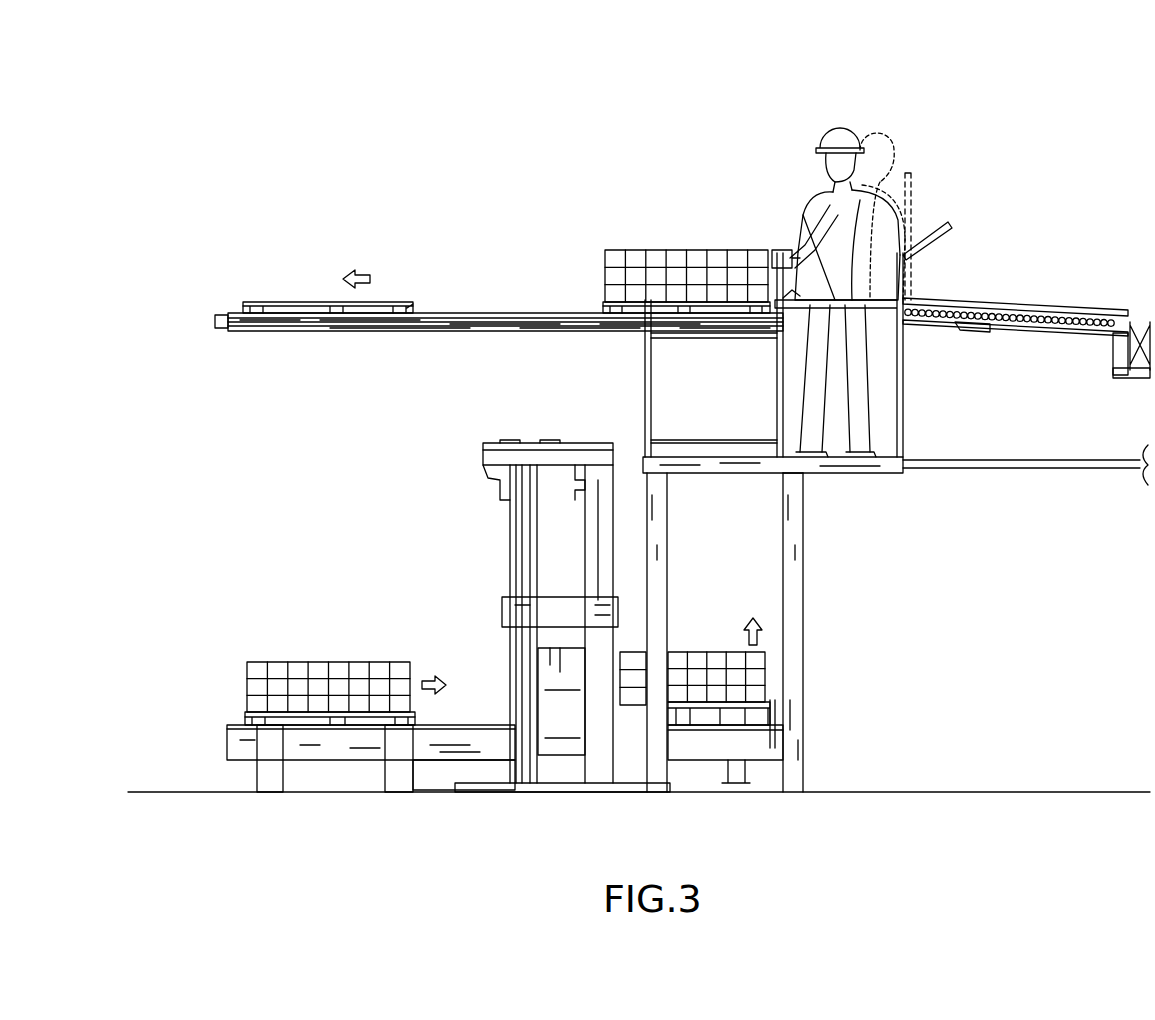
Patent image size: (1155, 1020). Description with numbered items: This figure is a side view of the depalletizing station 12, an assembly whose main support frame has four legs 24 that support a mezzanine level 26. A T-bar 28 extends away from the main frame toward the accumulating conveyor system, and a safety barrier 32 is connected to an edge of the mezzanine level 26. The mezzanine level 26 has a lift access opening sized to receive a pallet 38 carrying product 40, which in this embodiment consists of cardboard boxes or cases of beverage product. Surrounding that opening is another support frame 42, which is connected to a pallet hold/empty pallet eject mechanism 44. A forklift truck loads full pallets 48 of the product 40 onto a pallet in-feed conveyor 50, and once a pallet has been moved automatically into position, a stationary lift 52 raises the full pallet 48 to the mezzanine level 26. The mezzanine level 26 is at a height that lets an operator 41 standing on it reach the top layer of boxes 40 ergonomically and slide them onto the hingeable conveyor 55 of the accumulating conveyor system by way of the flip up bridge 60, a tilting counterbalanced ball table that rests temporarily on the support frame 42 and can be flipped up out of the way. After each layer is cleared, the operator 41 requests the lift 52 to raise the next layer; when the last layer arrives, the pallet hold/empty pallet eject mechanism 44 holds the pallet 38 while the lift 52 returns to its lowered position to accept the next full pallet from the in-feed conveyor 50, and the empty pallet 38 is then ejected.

The depalletizing station 12 is at (757, 148).
The legs 24 is at (657, 510).
The mezzanine level 26 is at (848, 475).
The T-bar 28 is at (1060, 470).
The safety barrier 32 is at (903, 388).
The pallet 38 is at (345, 302).
The product 40 is at (680, 250).
The operator 41 is at (846, 124).
The support frame 42 is at (777, 395).
The pallet hold/empty pallet eject mechanism 44 is at (540, 312).
The full pallets 48 is at (579, 244).
The pallet in-feed conveyor 50 is at (330, 743).
The stationary lift 52 is at (502, 608).
The hingeable conveyor 55 is at (1014, 291).
The flip up bridge 60 is at (912, 188).